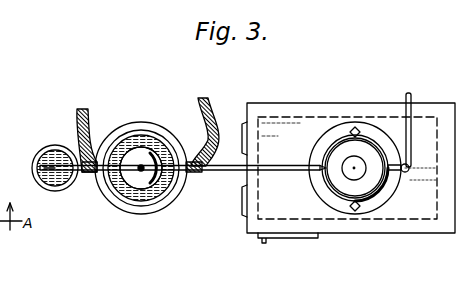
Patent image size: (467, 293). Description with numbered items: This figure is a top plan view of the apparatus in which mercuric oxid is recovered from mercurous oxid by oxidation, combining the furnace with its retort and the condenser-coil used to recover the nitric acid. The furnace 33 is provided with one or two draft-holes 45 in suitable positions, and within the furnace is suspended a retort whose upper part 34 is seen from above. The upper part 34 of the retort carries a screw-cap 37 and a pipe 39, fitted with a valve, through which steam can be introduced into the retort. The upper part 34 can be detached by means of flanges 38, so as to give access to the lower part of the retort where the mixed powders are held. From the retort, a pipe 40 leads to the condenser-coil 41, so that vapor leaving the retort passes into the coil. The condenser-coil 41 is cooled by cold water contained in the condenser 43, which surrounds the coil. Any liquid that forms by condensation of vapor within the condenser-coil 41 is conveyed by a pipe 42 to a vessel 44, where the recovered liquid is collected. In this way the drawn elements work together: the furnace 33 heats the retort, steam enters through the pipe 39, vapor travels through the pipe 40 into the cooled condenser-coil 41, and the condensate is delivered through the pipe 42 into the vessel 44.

The furnace 33 is at (404, 224).
The upper part of the retort 34 is at (374, 182).
The screw-cap 37 is at (358, 165).
The flanges 38 is at (190, 176).
The pipe 39 is at (414, 97).
The pipe 40 is at (279, 166).
The condenser-coil 41 is at (150, 192).
The pipe 42 is at (66, 178).
The condenser 43 is at (120, 198).
The vessel 44 is at (52, 150).
The draft-holes 45 is at (243, 132).